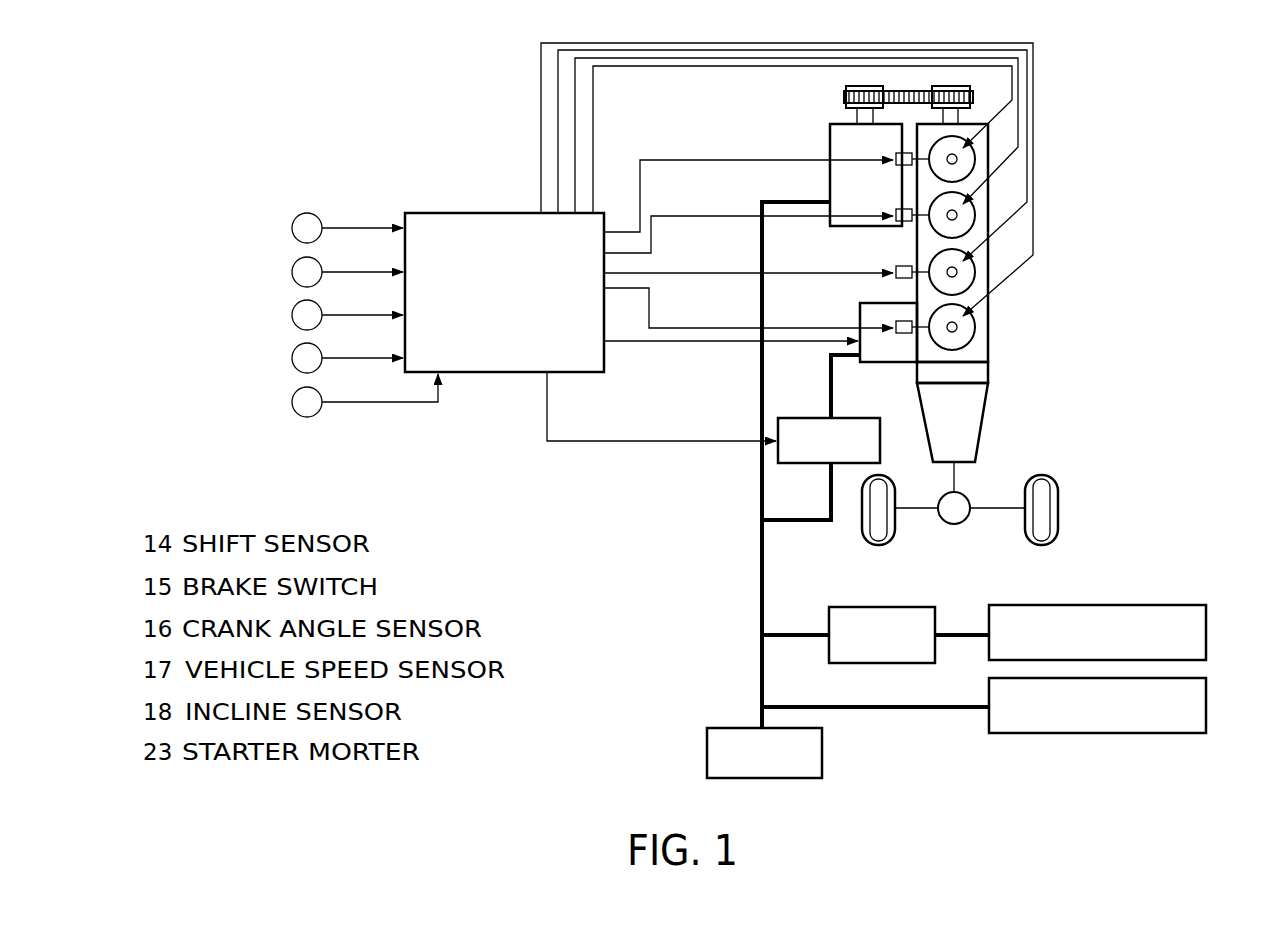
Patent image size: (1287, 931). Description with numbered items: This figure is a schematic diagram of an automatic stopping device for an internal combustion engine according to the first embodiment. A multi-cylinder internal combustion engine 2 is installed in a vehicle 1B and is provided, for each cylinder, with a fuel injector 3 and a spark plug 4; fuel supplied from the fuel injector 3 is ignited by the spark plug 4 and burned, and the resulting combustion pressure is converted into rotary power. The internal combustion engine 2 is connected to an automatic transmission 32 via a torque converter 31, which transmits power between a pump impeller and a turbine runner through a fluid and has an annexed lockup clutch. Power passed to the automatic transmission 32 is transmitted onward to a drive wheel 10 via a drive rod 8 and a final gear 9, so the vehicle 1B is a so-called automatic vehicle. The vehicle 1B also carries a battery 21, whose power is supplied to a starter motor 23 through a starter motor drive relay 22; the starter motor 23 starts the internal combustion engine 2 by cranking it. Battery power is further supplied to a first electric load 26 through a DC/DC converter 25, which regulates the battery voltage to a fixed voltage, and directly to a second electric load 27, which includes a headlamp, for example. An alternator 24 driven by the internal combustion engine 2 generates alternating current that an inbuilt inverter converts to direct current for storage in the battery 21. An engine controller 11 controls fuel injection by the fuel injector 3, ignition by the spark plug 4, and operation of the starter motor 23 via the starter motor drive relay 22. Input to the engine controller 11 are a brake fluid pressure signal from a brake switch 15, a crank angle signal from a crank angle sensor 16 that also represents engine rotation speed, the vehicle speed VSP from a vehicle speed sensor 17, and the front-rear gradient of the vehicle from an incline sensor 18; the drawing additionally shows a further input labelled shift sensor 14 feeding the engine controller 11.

The vehicle 1B is at (1102, 510).
The internal combustion engine 2 is at (989, 342).
The fuel injector 3 is at (905, 228).
The spark plug 4 is at (958, 161).
The drive rod 8 is at (957, 483).
The final gear 9 is at (960, 518).
The drive wheel 10 is at (1050, 498).
The engine controller 11 is at (440, 213).
The shift sensor 14 is at (295, 218).
The brake switch 15 is at (295, 262).
The crank angle sensor 16 is at (295, 305).
The vehicle speed sensor 17 is at (295, 348).
The incline sensor 18 is at (295, 392).
The battery 21 is at (822, 752).
The starter motor drive relay 22 is at (845, 418).
The starter motor 23 is at (860, 313).
The alternator 24 is at (829, 140).
The DC/DC converter 25 is at (895, 607).
The first electric load 26 is at (1206, 610).
The second electric load 27 is at (1206, 686).
The torque converter 31 is at (980, 376).
The automatic transmission 32 is at (972, 418).